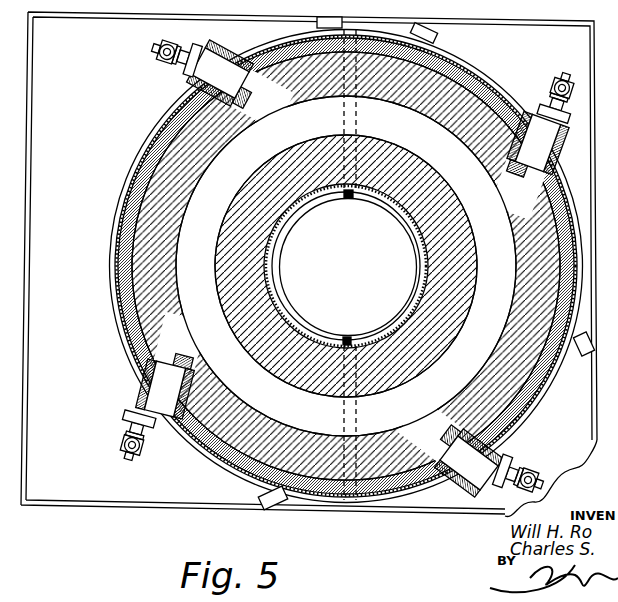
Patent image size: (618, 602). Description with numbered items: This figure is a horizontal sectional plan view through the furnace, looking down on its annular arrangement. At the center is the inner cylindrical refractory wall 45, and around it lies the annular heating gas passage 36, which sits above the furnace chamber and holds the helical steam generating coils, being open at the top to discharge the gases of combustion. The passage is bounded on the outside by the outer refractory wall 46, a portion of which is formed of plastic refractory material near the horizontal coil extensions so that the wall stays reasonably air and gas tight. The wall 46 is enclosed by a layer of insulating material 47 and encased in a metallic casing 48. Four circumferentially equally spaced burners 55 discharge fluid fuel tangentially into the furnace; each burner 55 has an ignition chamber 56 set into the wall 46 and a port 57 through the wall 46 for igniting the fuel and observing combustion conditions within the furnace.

The annular heating gas passage 36 is at (215, 236).
The inner cylindrical refractory wall 45 is at (448, 255).
The outer refractory wall 46 is at (185, 181).
The layer of insulating material 47 is at (133, 180).
The metallic casing 48 is at (147, 144).
The burners 55 is at (163, 62).
The ignition chamber 56 is at (275, 103).
The port 57 is at (408, 122).